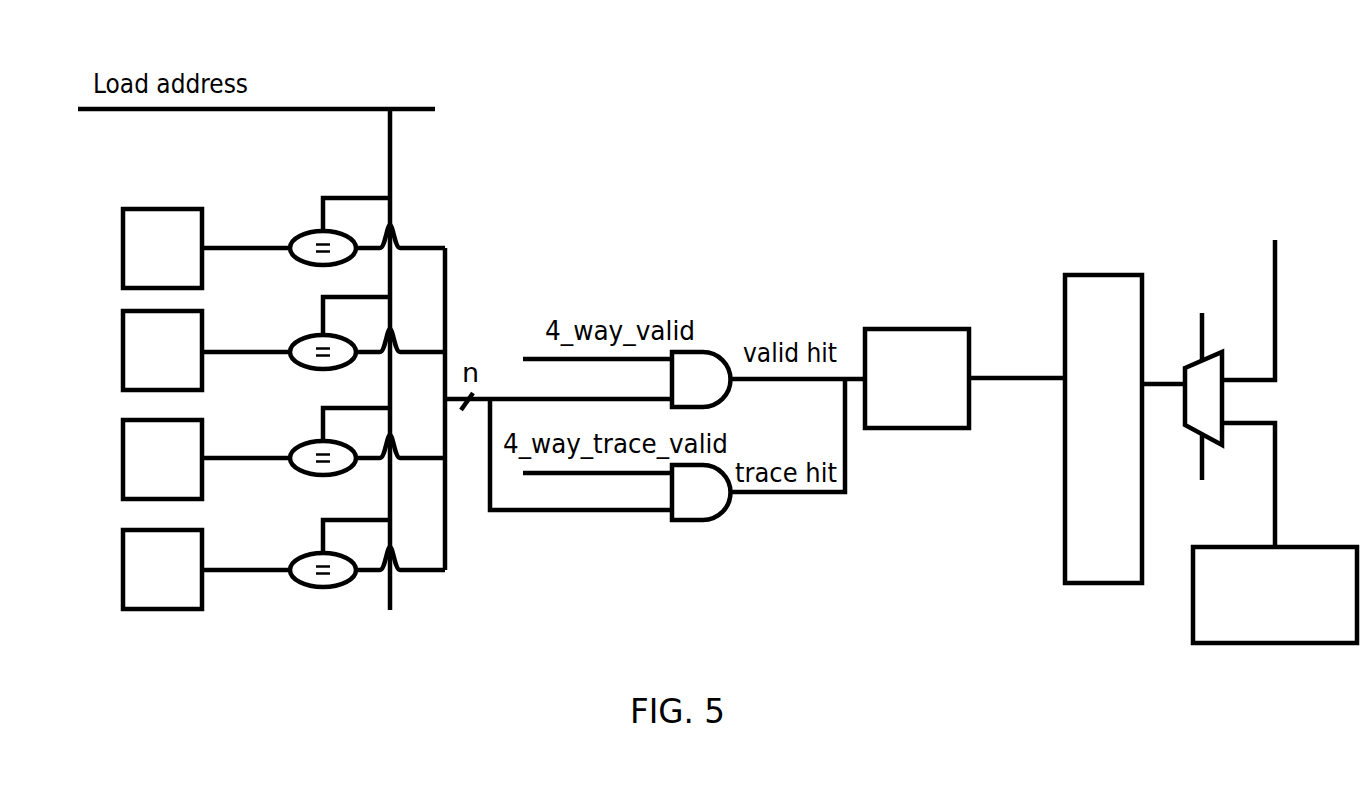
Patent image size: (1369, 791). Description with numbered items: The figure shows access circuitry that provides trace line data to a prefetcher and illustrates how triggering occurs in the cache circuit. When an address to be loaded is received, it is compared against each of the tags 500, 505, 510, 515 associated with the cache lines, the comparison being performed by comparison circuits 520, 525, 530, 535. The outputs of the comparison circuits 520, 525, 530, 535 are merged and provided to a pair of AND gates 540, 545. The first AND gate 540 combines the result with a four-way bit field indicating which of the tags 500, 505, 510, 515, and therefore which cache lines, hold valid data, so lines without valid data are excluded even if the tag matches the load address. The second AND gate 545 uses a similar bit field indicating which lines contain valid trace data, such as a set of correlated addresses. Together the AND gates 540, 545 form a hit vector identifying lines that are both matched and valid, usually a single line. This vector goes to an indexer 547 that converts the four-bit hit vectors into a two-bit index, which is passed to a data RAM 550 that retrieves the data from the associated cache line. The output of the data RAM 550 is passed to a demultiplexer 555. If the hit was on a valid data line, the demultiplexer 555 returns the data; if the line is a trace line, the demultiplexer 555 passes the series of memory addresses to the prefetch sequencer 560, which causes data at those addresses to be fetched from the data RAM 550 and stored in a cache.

The tag 500 is at (121, 250).
The tag 505 is at (121, 352).
The tag 510 is at (121, 456).
The tag 515 is at (121, 572).
The comparison circuit 520 is at (292, 258).
The comparison circuit 525 is at (292, 362).
The comparison circuit 530 is at (292, 470).
The comparison circuit 535 is at (292, 583).
The first AND gate 540 is at (703, 348).
The second AND gate 545 is at (697, 523).
The indexer 547 is at (921, 430).
The data RAM 550 is at (1117, 583).
The demultiplexer 555 is at (1226, 413).
The prefetch sequencer 560 is at (1265, 645).